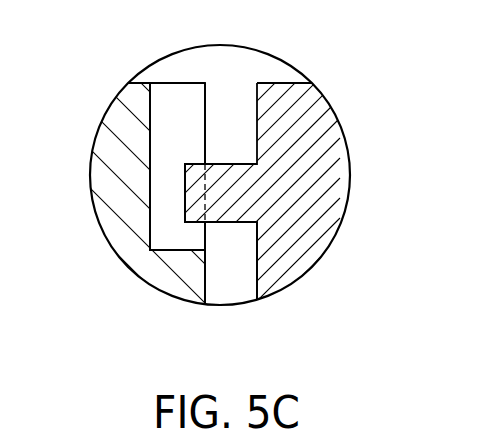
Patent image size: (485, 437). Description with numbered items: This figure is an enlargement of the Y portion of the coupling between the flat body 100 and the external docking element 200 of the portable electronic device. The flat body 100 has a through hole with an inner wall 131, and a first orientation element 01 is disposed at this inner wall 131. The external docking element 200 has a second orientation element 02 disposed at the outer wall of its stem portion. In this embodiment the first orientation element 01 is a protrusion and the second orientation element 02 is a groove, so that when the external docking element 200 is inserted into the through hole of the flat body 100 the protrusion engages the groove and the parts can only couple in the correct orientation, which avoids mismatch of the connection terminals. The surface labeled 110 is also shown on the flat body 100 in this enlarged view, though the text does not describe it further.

The Y portion Y is at (133, 82).
The external docking element 200 is at (120, 227).
The second orientation element 02 is at (175, 97).
The flat body 100 is at (315, 228).
The top surface of first member 110 is at (276, 82).
The inner wall 131 is at (256, 105).
The first orientation element 01 is at (195, 217).